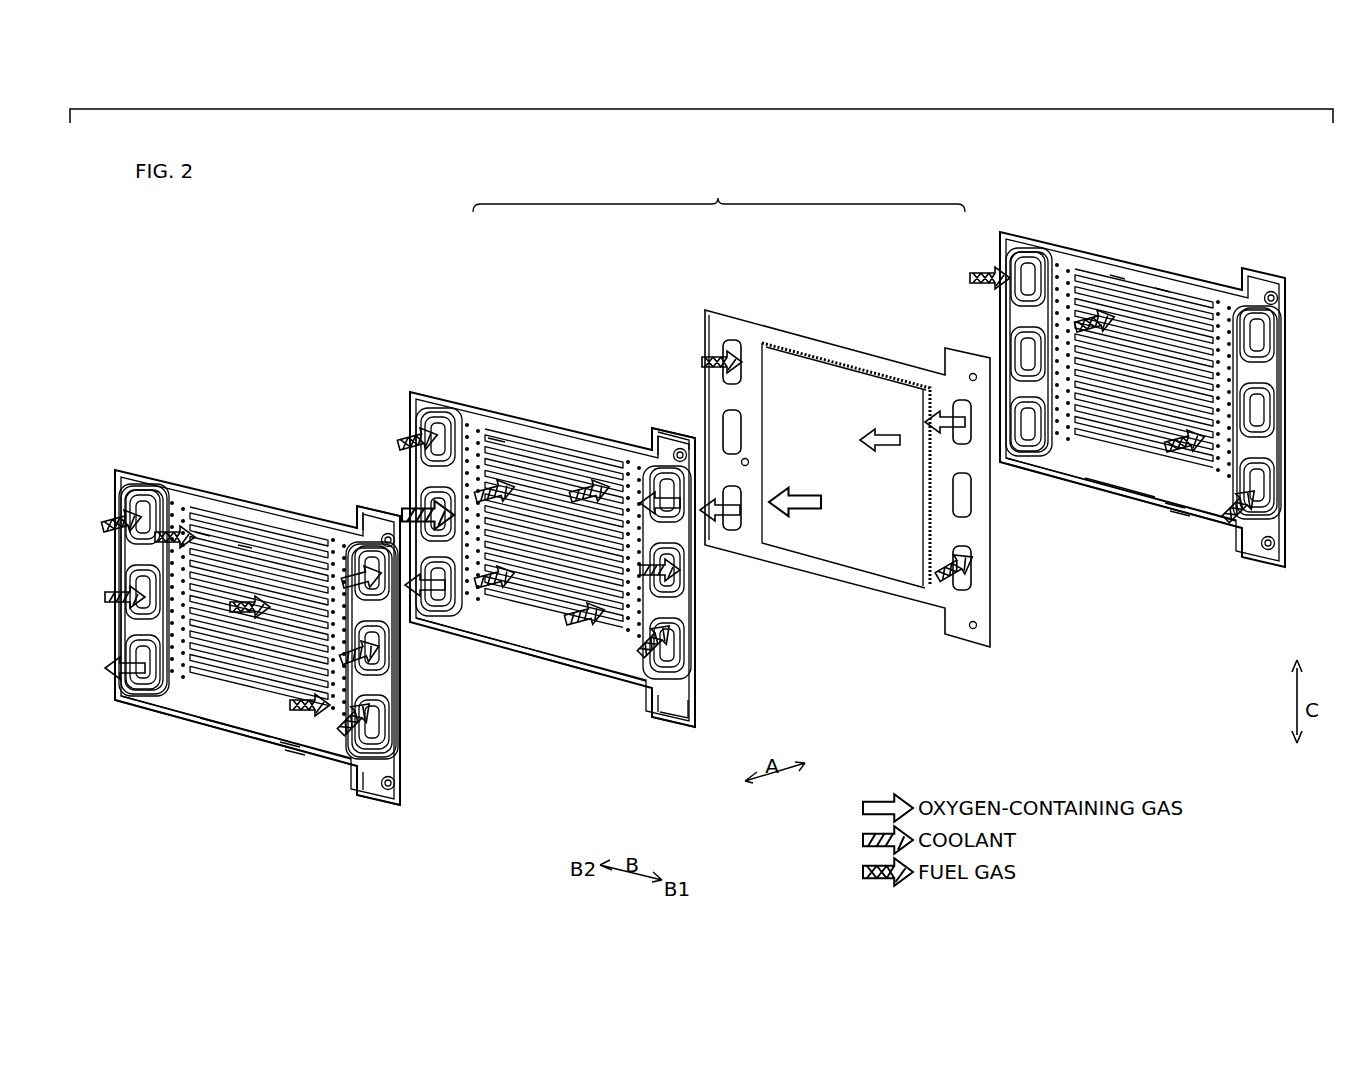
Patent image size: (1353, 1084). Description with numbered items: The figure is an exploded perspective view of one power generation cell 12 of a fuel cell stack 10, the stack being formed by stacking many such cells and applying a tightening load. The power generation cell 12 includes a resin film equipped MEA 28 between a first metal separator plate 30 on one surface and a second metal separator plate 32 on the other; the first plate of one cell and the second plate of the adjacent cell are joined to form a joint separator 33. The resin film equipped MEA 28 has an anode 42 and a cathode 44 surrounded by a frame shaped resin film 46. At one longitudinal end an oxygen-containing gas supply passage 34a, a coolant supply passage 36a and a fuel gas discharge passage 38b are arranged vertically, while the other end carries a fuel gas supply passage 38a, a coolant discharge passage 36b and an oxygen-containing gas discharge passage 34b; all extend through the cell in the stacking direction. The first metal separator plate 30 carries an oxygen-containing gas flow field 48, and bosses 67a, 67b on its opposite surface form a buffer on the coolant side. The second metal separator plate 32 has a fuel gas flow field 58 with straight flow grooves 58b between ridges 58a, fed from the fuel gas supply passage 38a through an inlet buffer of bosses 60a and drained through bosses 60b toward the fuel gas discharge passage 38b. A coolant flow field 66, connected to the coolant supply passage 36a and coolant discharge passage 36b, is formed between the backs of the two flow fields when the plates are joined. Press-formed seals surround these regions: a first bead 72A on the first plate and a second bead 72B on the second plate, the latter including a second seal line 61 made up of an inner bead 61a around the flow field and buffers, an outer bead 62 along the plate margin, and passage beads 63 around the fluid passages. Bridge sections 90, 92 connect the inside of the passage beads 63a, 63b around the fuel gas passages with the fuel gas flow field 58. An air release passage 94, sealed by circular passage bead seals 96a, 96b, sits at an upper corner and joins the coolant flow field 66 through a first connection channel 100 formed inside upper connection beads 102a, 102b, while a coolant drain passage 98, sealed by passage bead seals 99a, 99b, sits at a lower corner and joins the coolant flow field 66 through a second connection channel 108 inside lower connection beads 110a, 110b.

The fuel cell stack 10 is at (320, 212).
The power generation cell 12 is at (719, 194).
The resin film equipped MEA 28 is at (705, 294).
The first metal separator plate 30 is at (482, 375).
The second metal separator plate 32 is at (120, 454).
The joint separator 33 is at (315, 372).
The oxygen-containing gas supply passage 34a is at (1256, 250).
The oxygen-containing gas discharge passage 34b is at (135, 680).
The coolant supply passage 36a is at (395, 700).
The coolant discharge passage 36b is at (128, 600).
The fuel gas supply passage 38a is at (1010, 275).
The fuel gas discharge passage 38b is at (365, 745).
The anode 42 is at (818, 375).
The cathode 44 is at (790, 385).
The resin film 46 is at (743, 330).
The oxygen-containing gas flow field 48 is at (530, 450).
The fuel gas flow field 58 is at (258, 450).
The ridges 58a is at (204, 532).
The straight flow grooves 58b is at (244, 544).
The bosses 60a is at (183, 690).
The bosses 60b is at (337, 706).
The second seal line 61 is at (262, 748).
The inner bead 61a is at (216, 728).
The outer bead 62 is at (243, 742).
The passage beads 63 is at (125, 574).
The passage bead 63a is at (113, 495).
The passage bead 63b is at (392, 755).
The coolant flow field 66 is at (498, 438).
The bosses 67a is at (633, 650).
The bosses 67b is at (472, 605).
The first bead 72A is at (519, 665).
The second bead 72B is at (204, 742).
The bridge section 90 is at (163, 500).
The bridge section 92 is at (360, 765).
The air release passage 94 is at (389, 532).
The passage bead seal 96a is at (680, 447).
The passage bead seal 96b is at (388, 532).
The coolant drain passage 98 is at (393, 787).
The passage bead seal 99a is at (684, 712).
The passage bead seal 99b is at (393, 790).
The first connection channel 100 is at (655, 432).
The upper connection bead 102a is at (670, 448).
The upper connection bead 102b is at (375, 527).
The second connection channel 108 is at (680, 712).
The lower connection bead 110a is at (655, 705).
The lower connection bead 110b is at (374, 777).